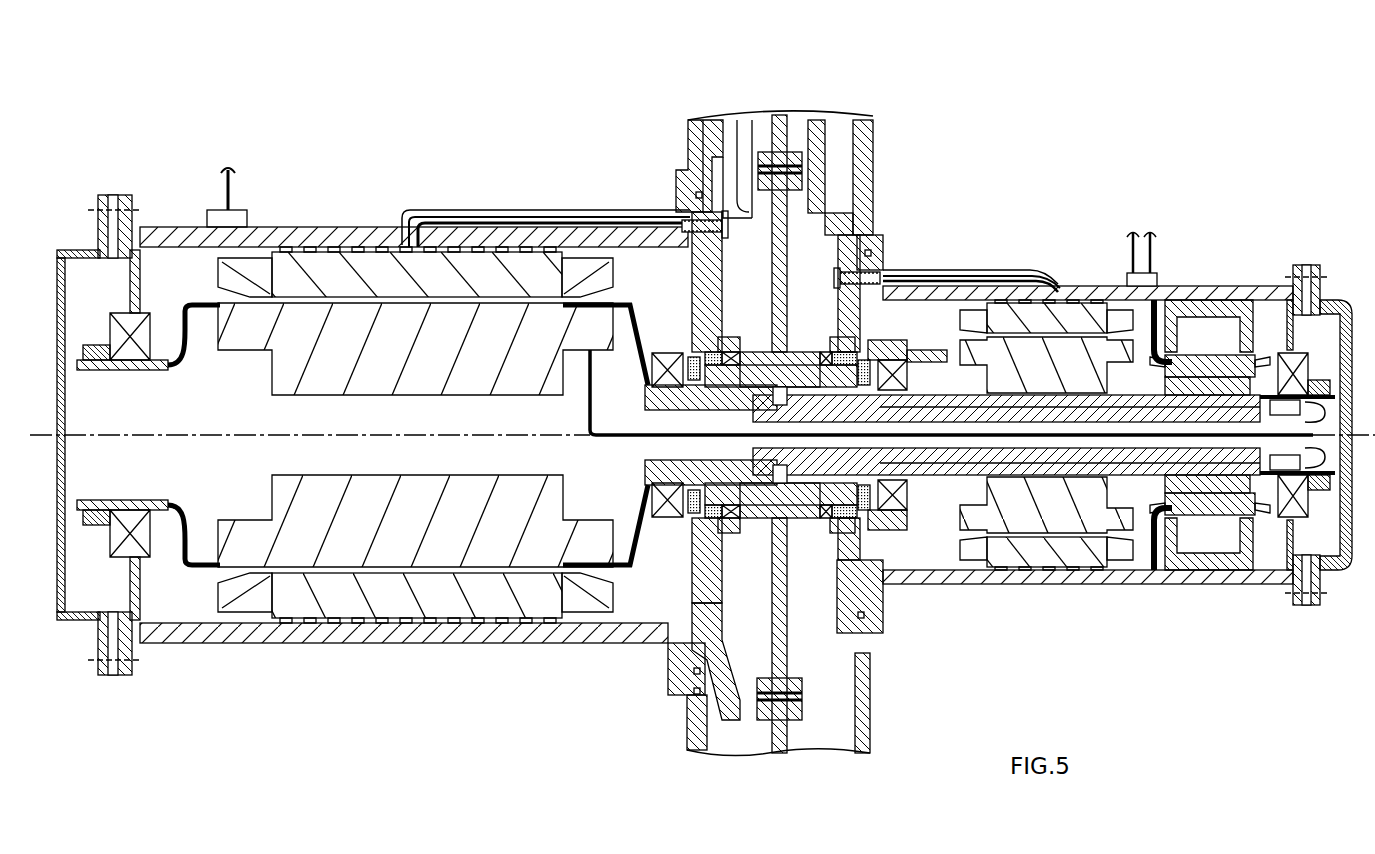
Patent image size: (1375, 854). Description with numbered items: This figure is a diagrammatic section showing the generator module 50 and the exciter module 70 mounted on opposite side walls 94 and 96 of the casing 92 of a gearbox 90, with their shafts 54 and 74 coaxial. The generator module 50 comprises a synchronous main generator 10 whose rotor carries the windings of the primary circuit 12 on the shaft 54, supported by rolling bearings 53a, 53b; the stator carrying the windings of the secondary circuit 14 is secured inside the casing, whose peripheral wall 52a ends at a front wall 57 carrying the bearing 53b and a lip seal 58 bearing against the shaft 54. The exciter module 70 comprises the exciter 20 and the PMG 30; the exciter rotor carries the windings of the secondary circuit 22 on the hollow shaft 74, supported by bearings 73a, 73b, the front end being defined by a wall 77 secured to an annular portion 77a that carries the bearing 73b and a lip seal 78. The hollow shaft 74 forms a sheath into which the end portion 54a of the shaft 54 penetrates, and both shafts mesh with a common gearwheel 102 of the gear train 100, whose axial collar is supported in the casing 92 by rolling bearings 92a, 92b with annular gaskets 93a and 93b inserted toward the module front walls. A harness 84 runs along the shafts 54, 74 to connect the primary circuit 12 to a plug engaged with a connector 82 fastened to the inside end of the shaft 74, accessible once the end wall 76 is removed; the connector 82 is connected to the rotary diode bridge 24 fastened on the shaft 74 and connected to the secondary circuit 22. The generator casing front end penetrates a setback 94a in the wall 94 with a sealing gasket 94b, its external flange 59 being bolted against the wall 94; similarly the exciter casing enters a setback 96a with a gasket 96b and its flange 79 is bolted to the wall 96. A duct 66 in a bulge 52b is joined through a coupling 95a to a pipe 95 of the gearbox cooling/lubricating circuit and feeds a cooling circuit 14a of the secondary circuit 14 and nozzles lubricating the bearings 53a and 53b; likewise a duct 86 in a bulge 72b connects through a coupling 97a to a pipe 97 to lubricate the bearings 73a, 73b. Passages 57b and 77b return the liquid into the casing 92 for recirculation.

The synchronous main generator 10 is at (232, 458).
The primary circuit 12 is at (462, 392).
The secondary circuit 14 is at (300, 258).
The cooling circuit 14a is at (368, 240).
The exciter 20 is at (985, 575).
The secondary circuit 22 is at (1075, 300).
The rotary diode bridge 24 is at (1300, 385).
The PMG 30 is at (1150, 490).
The generator module 50 is at (390, 165).
The lower housing wall 52a is at (622, 645).
The bulge 52b is at (470, 210).
The rolling bearing 53a is at (130, 360).
The rolling bearing 53b is at (670, 518).
The shaft 54 is at (632, 353).
The end portion 54a is at (790, 442).
The wall 57 is at (695, 310).
The passage 57b is at (698, 622).
The lip seal 58 is at (690, 355).
The external flange 59 is at (680, 690).
The duct 66 is at (506, 223).
The exciter module 70 is at (1170, 235).
The bulge 72b is at (932, 272).
The bearing 73a is at (1305, 495).
The bearing 73b is at (905, 497).
The shaft 74 is at (920, 378).
The end wall 76 is at (1350, 545).
The wall 77 is at (870, 522).
The annular portion 77a is at (955, 345).
The passage 77b is at (845, 565).
The lip seal 78 is at (890, 358).
The outwardly-directed flange 79 is at (870, 620).
The connector 82 is at (1302, 440).
The harness 84 is at (662, 433).
The duct 86 is at (940, 278).
The gearbox 90 is at (686, 112).
The casing 92 is at (778, 262).
The rolling bearing 92a is at (745, 350).
The rolling bearing 92b is at (825, 350).
The annular gasket 93a is at (730, 345).
The annular gasket 93b is at (840, 345).
The side wall 94 is at (700, 140).
The setback 94a is at (700, 700).
The sealing gasket 94b is at (700, 665).
The pipe 95 is at (757, 118).
The coupling 95a is at (680, 190).
The side wall 96 is at (870, 175).
The setback 96a is at (870, 635).
The sealing gasket 96b is at (840, 625).
The pipe 97 is at (820, 130).
The coupling 97a is at (880, 245).
The gear train 100 is at (797, 120).
The common gearwheel 102 is at (780, 520).